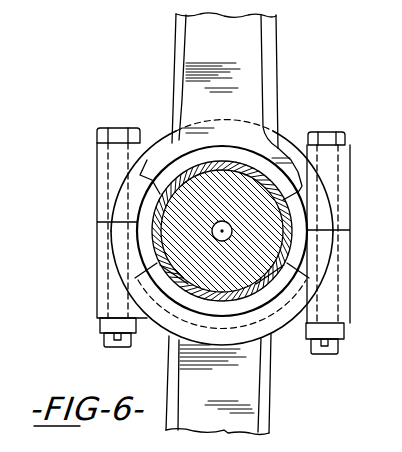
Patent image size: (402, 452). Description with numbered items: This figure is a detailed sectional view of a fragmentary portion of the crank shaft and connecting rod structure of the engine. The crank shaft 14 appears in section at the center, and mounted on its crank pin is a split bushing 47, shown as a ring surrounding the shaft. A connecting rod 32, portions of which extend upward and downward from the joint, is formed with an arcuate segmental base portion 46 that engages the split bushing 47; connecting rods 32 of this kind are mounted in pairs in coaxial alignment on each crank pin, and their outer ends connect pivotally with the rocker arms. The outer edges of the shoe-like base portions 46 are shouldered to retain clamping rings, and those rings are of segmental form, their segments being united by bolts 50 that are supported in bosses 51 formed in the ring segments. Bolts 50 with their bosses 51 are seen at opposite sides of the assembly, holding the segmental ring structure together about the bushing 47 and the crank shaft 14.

The crank shaft 14 is at (165, 247).
The connecting rod 32 is at (229, 224).
The arcuate segmental base portion 46 is at (263, 166).
The split bushing 47 is at (307, 170).
The bolt 50 is at (220, 234).
The boss 51 is at (344, 180).